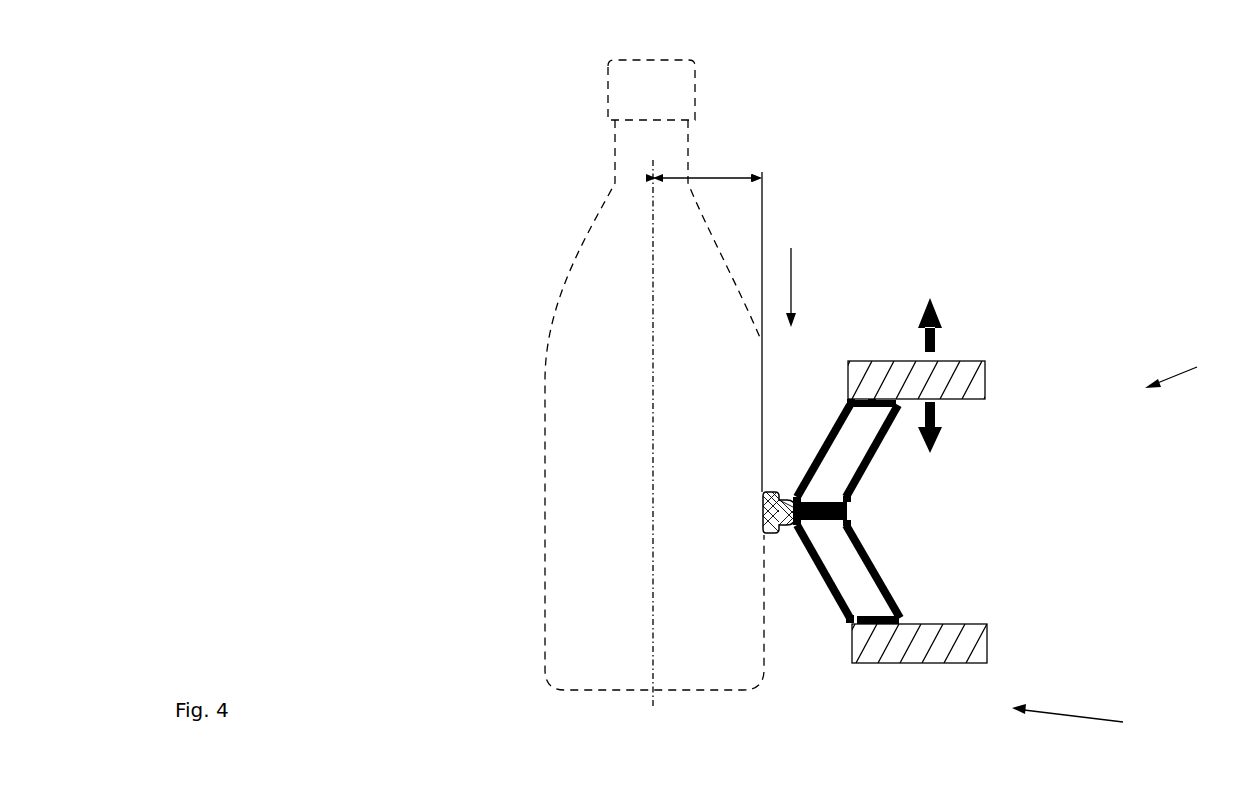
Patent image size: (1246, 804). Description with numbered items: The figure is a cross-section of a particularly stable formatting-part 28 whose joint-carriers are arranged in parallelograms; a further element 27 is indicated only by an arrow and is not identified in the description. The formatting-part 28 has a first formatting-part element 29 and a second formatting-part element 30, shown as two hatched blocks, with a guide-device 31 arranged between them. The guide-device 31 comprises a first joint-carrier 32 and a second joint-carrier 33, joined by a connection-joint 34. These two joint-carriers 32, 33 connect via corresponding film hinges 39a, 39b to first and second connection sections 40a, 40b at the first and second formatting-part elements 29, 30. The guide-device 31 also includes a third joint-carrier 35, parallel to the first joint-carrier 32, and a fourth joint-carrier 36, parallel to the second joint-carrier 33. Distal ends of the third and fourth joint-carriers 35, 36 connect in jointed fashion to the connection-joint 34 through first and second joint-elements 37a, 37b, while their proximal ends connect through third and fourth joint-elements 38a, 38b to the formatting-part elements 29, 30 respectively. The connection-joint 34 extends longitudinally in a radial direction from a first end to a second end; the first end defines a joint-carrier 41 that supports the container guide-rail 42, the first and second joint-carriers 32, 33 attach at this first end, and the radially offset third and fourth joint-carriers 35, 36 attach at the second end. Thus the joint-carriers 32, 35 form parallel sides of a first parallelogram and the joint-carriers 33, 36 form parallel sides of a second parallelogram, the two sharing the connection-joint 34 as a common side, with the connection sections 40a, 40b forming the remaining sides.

The lower holding unit 27 is at (1090, 720).
The formatting-part 28 is at (1185, 372).
The first formatting-part element 29 is at (975, 656).
The second formatting-part element 30 is at (980, 370).
The guide-device 31 is at (790, 272).
The first joint-carrier 32 is at (842, 608).
The second joint-carrier 33 is at (821, 453).
The connection-joint 34 is at (847, 509).
The third joint-carrier 35 is at (885, 582).
The fourth joint-carrier 36 is at (880, 450).
The first joint-element 37a is at (851, 525).
The second joint-element 37b is at (851, 500).
The third joint-element 38a is at (900, 617).
The fourth joint-element 38b is at (902, 404).
The film hinge 39a is at (848, 622).
The film hinge 39b is at (850, 398).
The first connection section 40a is at (877, 623).
The second connection section 40b is at (872, 398).
The joint-carrier 41 is at (787, 527).
The container guide-rail 42 is at (764, 502).